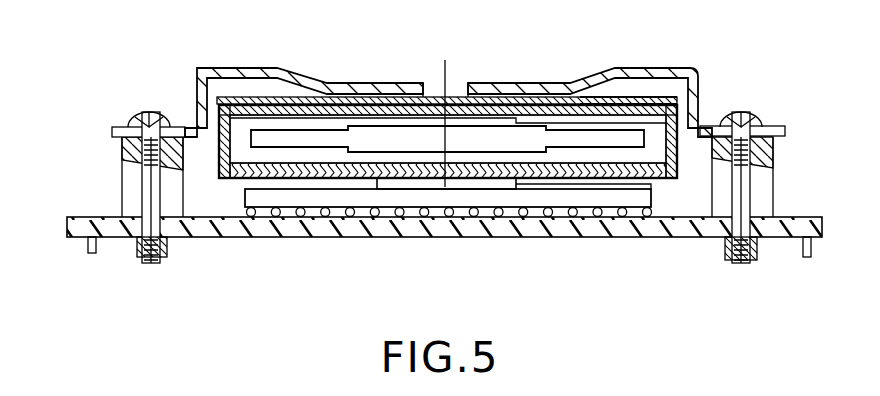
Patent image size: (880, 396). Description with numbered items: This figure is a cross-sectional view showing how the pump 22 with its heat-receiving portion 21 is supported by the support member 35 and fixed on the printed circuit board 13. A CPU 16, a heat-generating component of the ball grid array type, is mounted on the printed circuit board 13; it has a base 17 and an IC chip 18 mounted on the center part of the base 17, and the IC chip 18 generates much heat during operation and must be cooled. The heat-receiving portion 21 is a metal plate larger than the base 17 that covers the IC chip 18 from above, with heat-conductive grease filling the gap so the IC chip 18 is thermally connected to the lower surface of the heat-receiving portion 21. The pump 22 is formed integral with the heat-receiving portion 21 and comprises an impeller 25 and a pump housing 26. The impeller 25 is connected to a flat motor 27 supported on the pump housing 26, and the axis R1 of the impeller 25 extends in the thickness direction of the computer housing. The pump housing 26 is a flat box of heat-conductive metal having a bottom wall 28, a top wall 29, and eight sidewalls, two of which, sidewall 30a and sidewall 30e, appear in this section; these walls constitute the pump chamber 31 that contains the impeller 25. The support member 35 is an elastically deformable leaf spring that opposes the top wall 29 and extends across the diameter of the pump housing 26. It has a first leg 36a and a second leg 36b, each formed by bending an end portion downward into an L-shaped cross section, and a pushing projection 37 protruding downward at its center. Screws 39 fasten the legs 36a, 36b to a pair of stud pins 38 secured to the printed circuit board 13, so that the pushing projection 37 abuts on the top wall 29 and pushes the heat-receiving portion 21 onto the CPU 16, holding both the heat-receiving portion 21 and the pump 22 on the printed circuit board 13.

The printed circuit board 13 is at (300, 228).
The CPU 16 is at (448, 249).
The base 17 is at (407, 197).
The IC chip 18 is at (463, 180).
The heat-receiving portion 21 is at (560, 183).
The pump 22 is at (625, 103).
The impeller 25 is at (365, 137).
The pump housing 26 is at (647, 103).
The flat motor 27 is at (578, 120).
The bottom wall 28 is at (610, 168).
The top wall 29 is at (301, 97).
The sidewall 30a is at (678, 140).
The sidewall 30e is at (217, 147).
The pump chamber 31 is at (582, 106).
The support member 35 is at (232, 68).
The first leg 36a is at (708, 125).
The second leg 36b is at (180, 125).
The pushing projection 37 is at (437, 93).
The stud pins 38 is at (133, 185).
The screws 39 is at (137, 117).
The axis of the impeller R1 is at (447, 70).